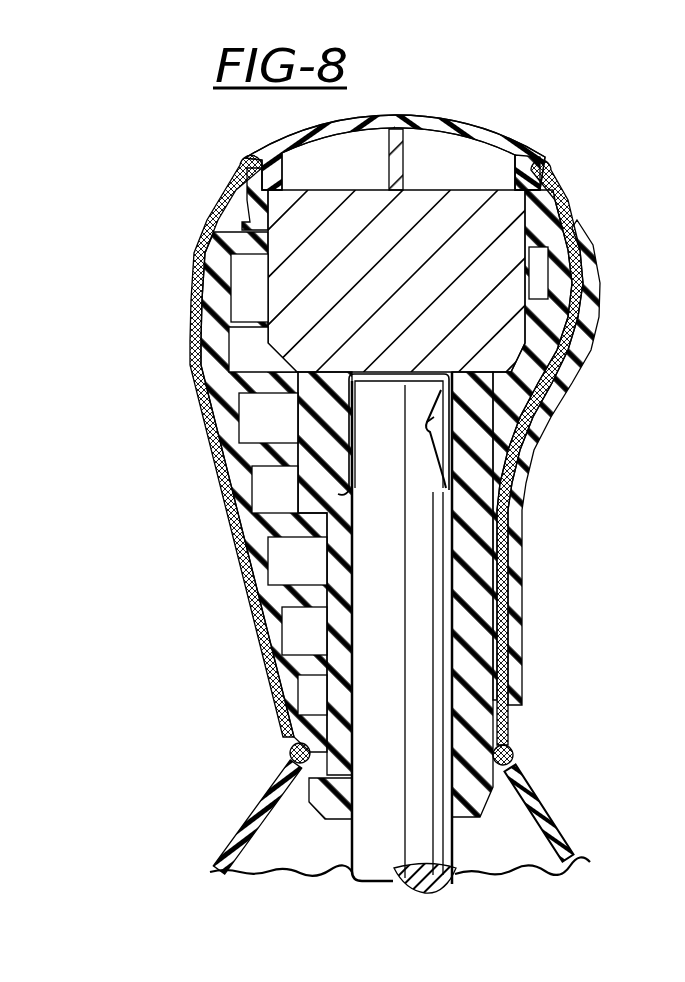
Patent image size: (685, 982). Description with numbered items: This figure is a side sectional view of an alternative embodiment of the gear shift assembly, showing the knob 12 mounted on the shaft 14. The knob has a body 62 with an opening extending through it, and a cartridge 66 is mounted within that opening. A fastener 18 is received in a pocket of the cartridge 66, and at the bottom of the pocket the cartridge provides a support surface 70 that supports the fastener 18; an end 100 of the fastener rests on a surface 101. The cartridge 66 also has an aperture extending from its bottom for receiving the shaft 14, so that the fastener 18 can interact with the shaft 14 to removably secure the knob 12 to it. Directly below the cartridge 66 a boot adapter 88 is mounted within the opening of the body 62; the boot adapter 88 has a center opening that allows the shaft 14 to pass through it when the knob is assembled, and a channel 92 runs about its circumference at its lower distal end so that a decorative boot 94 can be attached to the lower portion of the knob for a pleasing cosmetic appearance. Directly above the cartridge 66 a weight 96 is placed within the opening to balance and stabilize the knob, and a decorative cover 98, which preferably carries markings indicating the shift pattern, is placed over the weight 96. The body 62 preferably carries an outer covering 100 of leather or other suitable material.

The knob 12 is at (590, 340).
The shaft 14 is at (452, 643).
The fastener 18 is at (540, 440).
The body 62 is at (192, 370).
The cartridge 66 is at (512, 492).
The support surface 70 is at (248, 502).
The boot adapter 88 is at (322, 807).
The channel 92 is at (272, 786).
The decorative boot 94 is at (543, 797).
The weight 96 is at (508, 210).
The decorative cover 98 is at (448, 118).
The end of the fastener 100 is at (438, 483).
The surface 101 is at (447, 500).